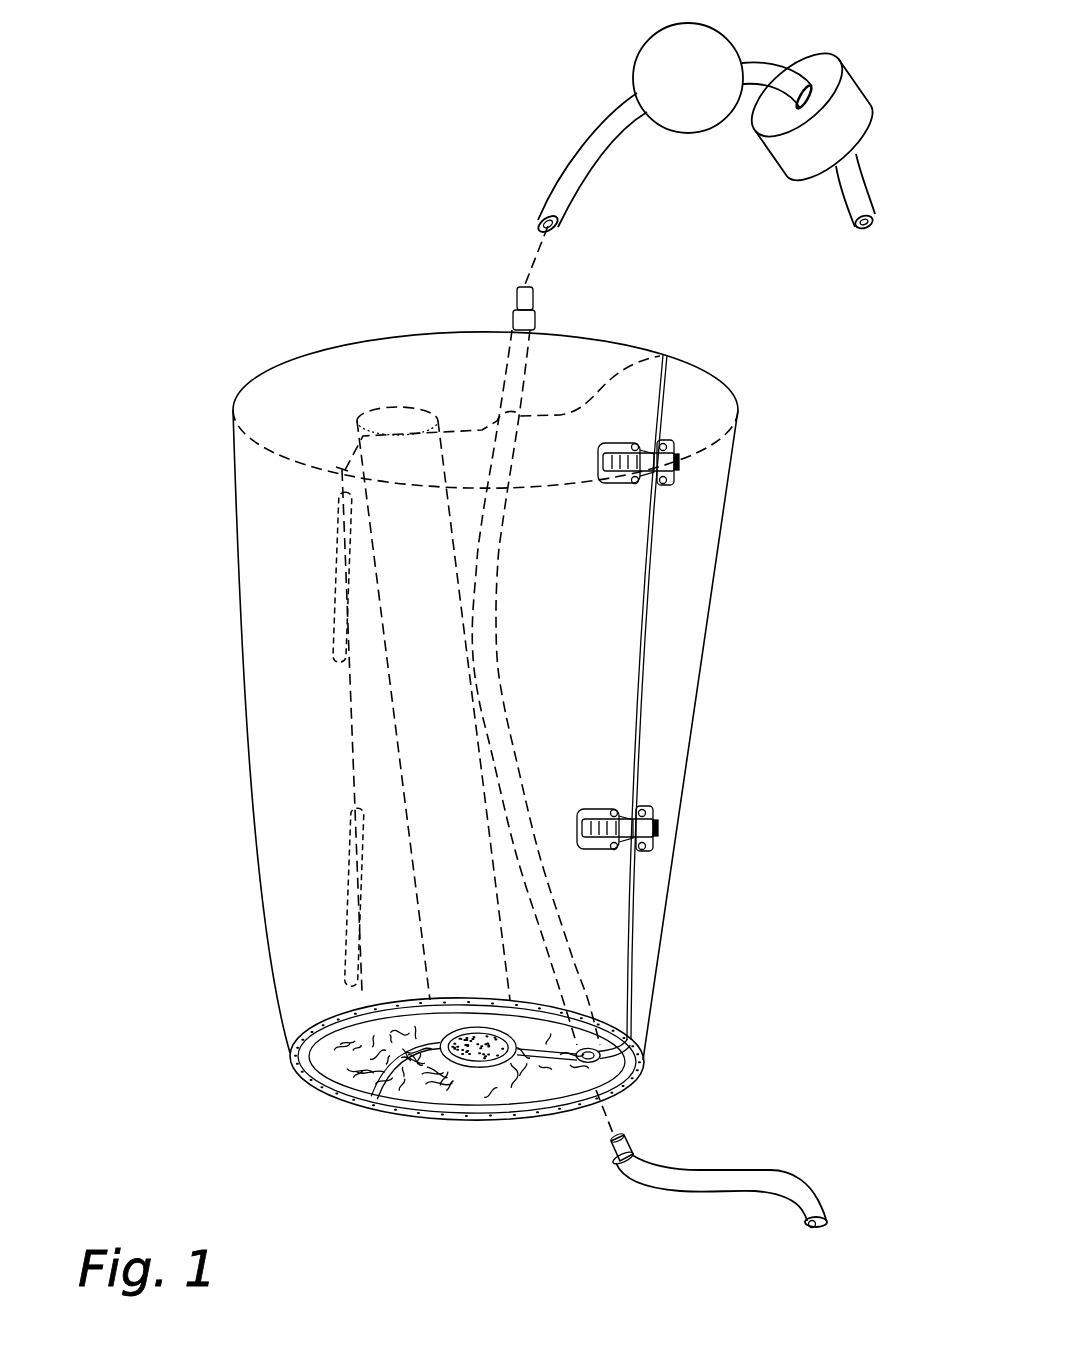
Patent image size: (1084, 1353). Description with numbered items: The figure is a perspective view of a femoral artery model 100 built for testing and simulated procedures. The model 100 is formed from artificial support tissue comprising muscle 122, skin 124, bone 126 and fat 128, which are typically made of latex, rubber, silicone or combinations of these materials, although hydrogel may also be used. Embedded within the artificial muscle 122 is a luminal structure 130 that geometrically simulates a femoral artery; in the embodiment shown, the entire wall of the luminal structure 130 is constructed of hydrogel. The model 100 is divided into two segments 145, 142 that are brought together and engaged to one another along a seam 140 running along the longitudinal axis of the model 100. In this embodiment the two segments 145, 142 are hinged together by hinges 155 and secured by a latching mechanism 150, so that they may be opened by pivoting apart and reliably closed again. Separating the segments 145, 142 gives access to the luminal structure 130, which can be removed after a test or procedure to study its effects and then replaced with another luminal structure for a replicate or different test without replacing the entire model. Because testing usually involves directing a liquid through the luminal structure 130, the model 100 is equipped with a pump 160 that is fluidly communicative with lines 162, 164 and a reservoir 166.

The femoral artery model 100 is at (188, 375).
The muscle 122 is at (455, 1115).
The skin 124 is at (295, 1080).
The bone 126 is at (402, 770).
The fat 128 is at (345, 1105).
The luminal structure 130 is at (492, 648).
The seam 140 is at (645, 655).
The segment 142 is at (607, 342).
The segment 145 is at (700, 380).
The latching mechanism 150 is at (680, 467).
The hinges 155 is at (340, 578).
The pump 160 is at (653, 60).
The line 162 is at (567, 170).
The line 164 is at (860, 187).
The reservoir 166 is at (863, 110).